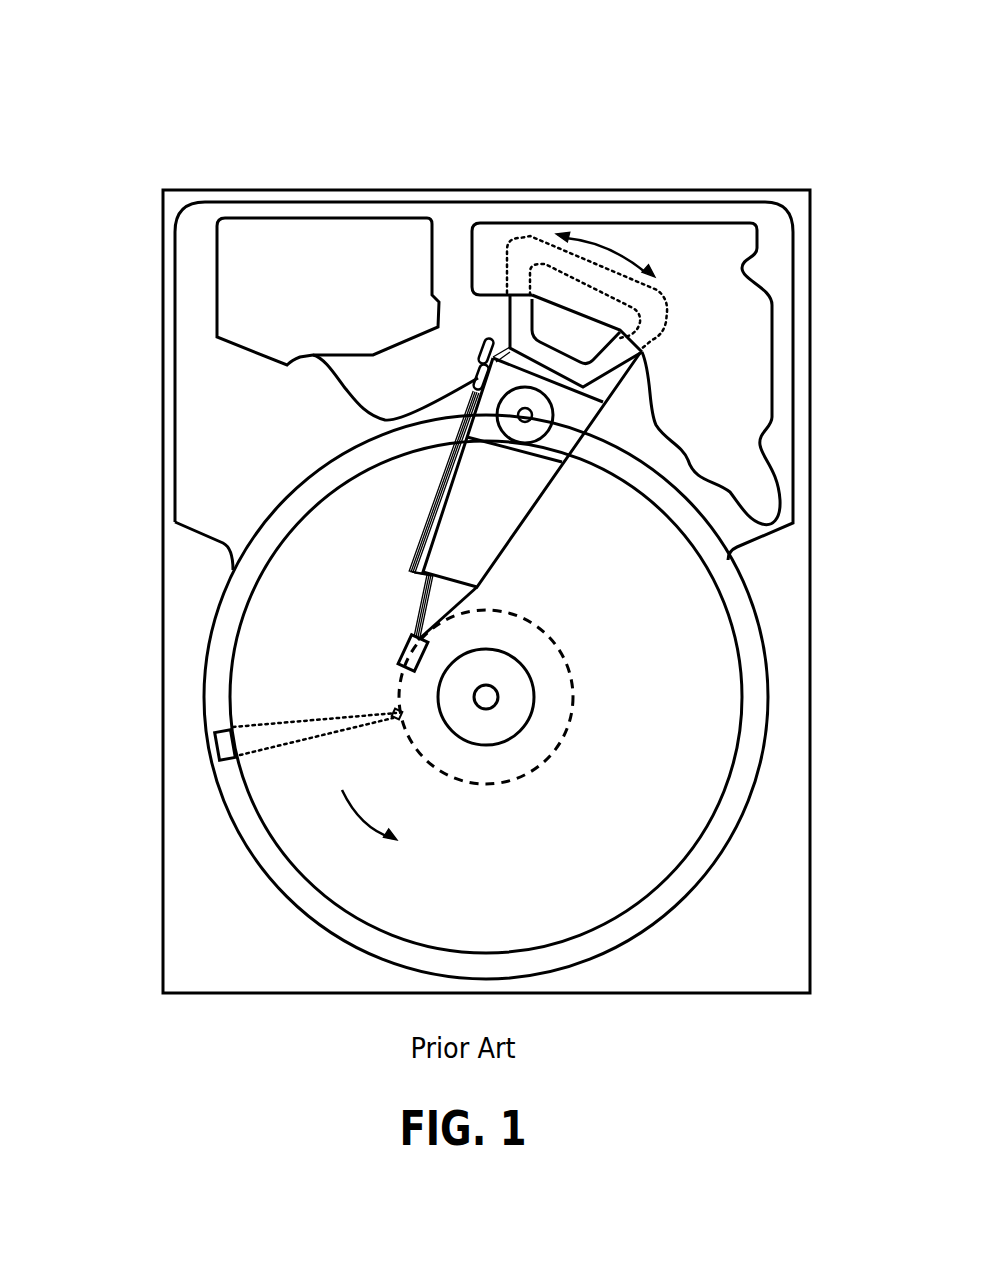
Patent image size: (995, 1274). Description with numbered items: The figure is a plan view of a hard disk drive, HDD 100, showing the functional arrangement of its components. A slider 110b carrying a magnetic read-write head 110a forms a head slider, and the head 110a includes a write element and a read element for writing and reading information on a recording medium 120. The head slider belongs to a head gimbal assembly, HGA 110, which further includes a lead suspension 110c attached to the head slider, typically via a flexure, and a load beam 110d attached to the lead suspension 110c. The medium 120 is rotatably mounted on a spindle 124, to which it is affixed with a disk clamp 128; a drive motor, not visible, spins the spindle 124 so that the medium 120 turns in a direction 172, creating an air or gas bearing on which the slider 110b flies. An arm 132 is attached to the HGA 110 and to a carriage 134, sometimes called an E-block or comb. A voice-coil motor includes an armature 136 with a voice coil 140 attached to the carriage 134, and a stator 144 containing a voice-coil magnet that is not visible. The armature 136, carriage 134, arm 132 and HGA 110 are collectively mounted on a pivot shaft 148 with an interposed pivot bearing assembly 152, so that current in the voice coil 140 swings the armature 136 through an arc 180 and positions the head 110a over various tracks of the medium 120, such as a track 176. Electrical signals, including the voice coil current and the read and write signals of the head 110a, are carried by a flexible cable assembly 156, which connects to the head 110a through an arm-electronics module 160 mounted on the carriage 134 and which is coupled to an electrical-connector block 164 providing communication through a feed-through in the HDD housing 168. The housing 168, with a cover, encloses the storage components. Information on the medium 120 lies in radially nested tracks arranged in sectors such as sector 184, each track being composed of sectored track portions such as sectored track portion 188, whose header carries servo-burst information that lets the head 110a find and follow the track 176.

The hard disk drive 100 is at (86, 62).
The head gimbal assembly 110 is at (252, 529).
The magnetic read-write head 110a is at (403, 668).
The slider 110b is at (408, 628).
The lead suspension 110c is at (437, 590).
The load beam 110d is at (412, 565).
The recording medium 120 is at (670, 648).
The spindle 124 is at (489, 697).
The disk clamp 128 is at (512, 713).
The arm 132 is at (478, 532).
The carriage 134 is at (545, 448).
The armature 136 is at (503, 330).
The voice coil 140 is at (520, 305).
The stator 144 is at (735, 313).
The pivot shaft 148 is at (530, 415).
The pivot bearing assembly 152 is at (537, 427).
The flexible cable assembly 156 is at (340, 385).
The arm-electronics module 160 is at (482, 380).
The electrical-connector block 164 is at (243, 288).
The HDD housing 168 is at (787, 203).
The direction 172 is at (396, 811).
The track 176 is at (560, 658).
The arc 180 is at (603, 250).
The sector 184 is at (215, 743).
The sectored track portion 188 is at (392, 710).